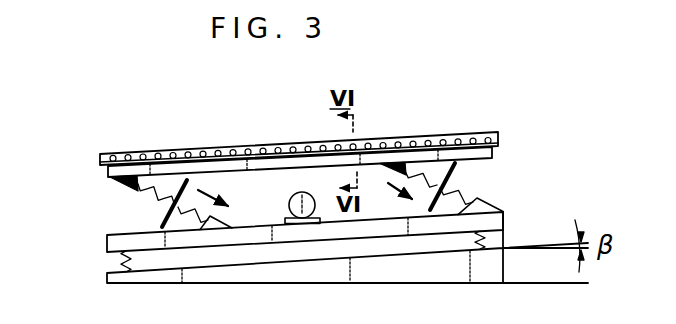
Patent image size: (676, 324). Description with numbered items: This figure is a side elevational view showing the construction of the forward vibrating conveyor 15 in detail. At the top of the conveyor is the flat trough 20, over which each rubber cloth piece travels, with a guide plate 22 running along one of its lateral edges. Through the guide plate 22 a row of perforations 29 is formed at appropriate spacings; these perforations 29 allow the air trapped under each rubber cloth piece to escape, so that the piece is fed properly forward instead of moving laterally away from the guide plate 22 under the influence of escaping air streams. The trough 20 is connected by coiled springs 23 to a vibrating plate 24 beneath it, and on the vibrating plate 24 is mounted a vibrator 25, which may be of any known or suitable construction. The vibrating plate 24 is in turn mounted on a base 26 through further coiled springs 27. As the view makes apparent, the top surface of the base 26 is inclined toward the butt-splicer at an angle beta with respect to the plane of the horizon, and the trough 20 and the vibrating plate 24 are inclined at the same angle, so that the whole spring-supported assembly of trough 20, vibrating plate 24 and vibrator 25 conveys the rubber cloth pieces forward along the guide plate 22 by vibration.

The forward vibrating conveyor 15 is at (270, 137).
The flat trough 20 is at (108, 173).
The guide plate 22 is at (125, 156).
The coiled springs 23 is at (157, 194).
The vibrating plate 24 is at (117, 243).
The vibrator 25 is at (290, 203).
The base 26 is at (373, 273).
The coiled springs 27 is at (491, 247).
The perforations 29 is at (207, 154).